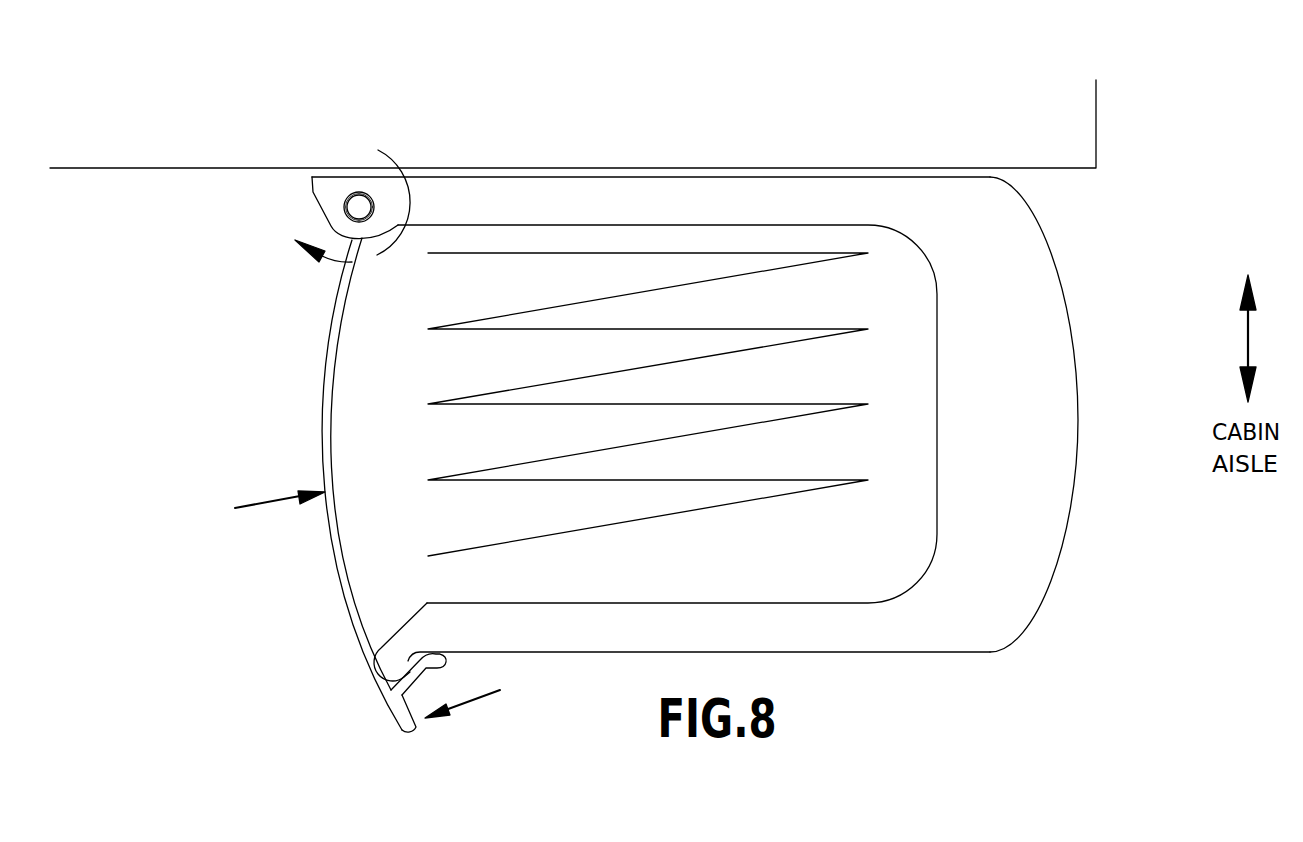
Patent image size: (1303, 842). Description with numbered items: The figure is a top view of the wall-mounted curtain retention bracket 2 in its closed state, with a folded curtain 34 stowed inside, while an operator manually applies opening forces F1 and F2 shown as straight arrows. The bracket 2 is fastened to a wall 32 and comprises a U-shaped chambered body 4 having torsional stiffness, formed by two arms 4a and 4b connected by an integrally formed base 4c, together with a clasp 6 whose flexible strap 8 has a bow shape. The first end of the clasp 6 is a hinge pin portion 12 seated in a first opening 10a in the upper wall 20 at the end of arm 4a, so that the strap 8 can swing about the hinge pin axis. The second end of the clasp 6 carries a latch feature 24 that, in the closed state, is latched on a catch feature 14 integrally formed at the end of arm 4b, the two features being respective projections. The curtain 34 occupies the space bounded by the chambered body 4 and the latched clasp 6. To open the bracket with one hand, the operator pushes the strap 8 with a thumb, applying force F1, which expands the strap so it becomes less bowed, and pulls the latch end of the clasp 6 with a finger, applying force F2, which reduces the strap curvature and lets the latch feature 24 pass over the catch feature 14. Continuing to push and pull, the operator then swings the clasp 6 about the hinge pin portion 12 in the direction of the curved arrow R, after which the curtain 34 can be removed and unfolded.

The curtain retention bracket 2 is at (735, 407).
The chambered body 4 is at (724, 402).
The arm 4a is at (478, 176).
The arm 4b is at (829, 653).
The base 4c is at (1065, 530).
The clasp 6 is at (381, 485).
The strap 8 is at (331, 543).
The first opening 10a is at (363, 192).
The hinge pin portion 12 is at (360, 211).
The catch feature 14 is at (393, 658).
The upper wall 20 is at (1050, 407).
The latch feature 24 is at (415, 682).
The wall 32 is at (1097, 123).
The folded curtain 34 is at (716, 507).
The rotation R is at (380, 253).
The opening force F1 is at (270, 500).
The opening force F2 is at (474, 700).